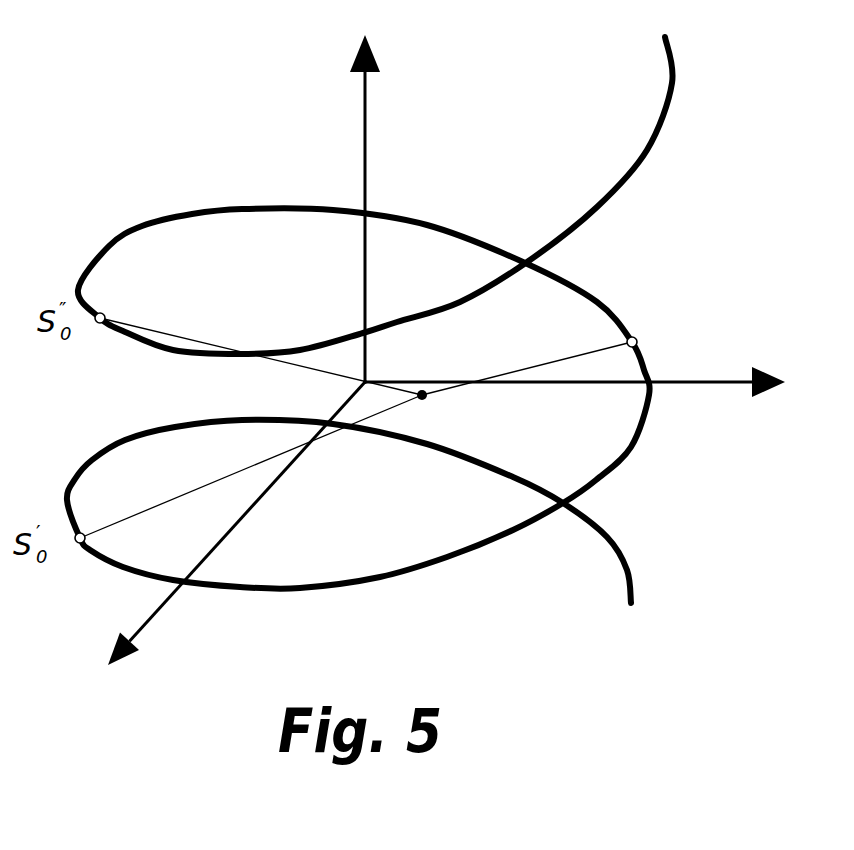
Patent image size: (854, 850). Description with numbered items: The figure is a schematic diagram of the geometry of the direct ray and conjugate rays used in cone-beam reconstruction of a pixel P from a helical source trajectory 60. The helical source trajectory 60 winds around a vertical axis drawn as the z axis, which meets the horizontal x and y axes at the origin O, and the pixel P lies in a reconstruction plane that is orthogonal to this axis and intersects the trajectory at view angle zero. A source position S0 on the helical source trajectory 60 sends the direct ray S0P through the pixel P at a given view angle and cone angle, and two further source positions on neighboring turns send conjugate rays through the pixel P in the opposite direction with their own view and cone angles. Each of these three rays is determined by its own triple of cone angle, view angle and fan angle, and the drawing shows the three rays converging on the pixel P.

The helical source trajectory 60 is at (370, 360).
The pixel P is at (356, 428).
The origin O is at (347, 375).
The source position S0 is at (659, 337).
The x axis x is at (212, 523).
The y axis y is at (575, 411).
The z axis z is at (386, 202).